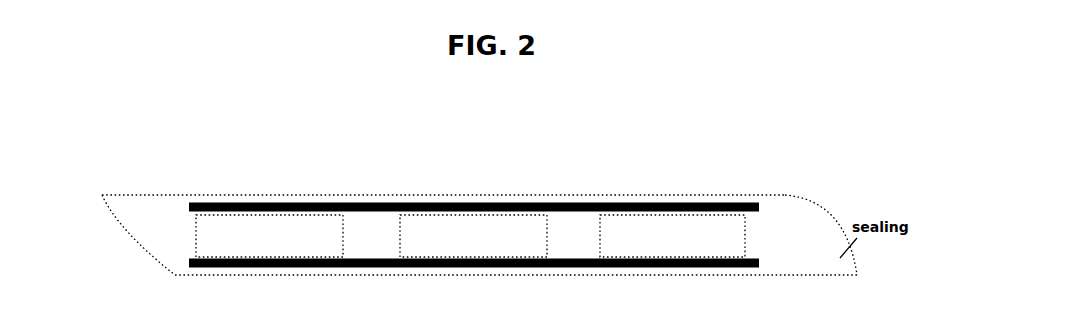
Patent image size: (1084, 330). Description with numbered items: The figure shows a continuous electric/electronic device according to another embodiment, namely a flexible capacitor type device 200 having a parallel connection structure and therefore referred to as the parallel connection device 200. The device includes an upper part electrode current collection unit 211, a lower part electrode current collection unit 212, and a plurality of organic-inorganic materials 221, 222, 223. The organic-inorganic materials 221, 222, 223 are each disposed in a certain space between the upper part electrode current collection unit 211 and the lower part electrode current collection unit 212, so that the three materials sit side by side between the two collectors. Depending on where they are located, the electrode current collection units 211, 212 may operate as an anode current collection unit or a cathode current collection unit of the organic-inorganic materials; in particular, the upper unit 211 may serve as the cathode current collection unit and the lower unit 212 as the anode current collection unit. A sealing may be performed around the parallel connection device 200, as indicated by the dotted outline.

The flexible capacitor type device 200 is at (464, 166).
The upper part electrode current collection unit 211 is at (708, 205).
The lower part electrode current collection unit 212 is at (214, 269).
The organic-inorganic material 221 is at (269, 236).
The organic-inorganic material 222 is at (473, 236).
The organic-inorganic material 223 is at (672, 236).